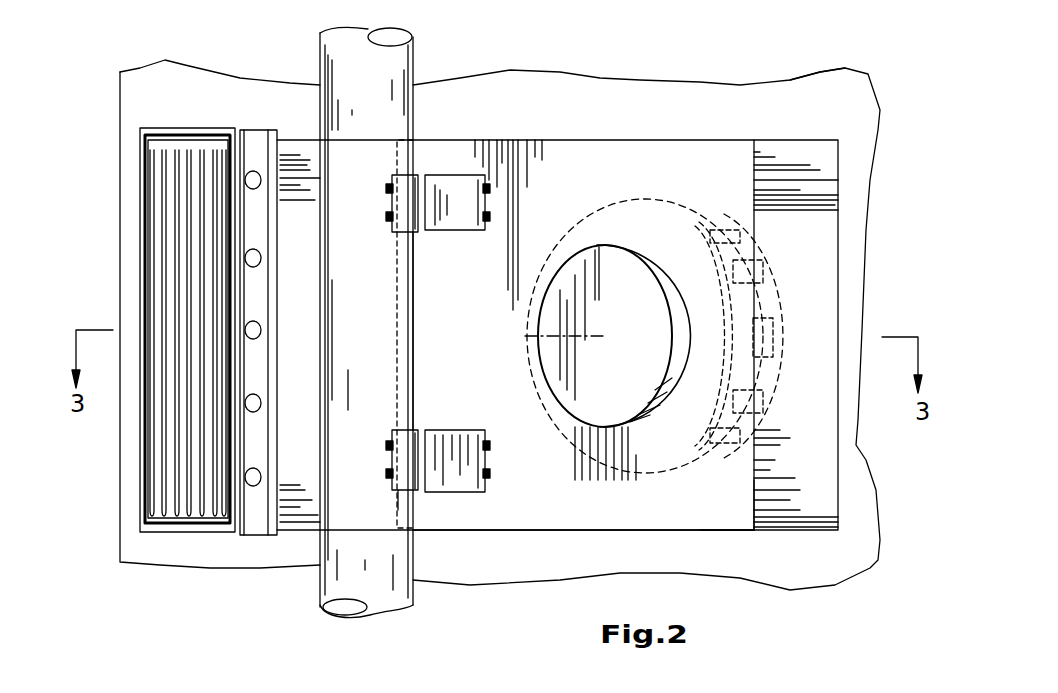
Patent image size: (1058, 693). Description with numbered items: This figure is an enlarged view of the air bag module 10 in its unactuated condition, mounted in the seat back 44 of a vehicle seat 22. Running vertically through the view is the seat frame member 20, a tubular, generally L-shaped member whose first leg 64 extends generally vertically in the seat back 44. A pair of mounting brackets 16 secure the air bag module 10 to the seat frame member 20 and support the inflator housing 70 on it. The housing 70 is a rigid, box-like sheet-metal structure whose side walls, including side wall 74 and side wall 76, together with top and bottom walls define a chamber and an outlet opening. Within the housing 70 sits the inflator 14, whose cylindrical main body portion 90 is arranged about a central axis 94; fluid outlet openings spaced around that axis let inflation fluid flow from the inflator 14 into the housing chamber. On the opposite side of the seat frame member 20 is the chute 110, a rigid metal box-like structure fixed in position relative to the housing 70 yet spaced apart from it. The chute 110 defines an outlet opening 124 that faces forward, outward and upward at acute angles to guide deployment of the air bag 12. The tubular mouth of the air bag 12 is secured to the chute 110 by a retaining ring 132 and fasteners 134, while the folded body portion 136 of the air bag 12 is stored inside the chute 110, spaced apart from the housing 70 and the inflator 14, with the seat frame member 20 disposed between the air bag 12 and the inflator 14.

The air bag module 10 is at (688, 105).
The air bag 12 is at (170, 208).
The inflator 14 is at (692, 207).
The mounting brackets 16 is at (456, 234).
The seat frame member 20 is at (425, 58).
The vehicle seat 22 is at (895, 112).
The seat back 44 is at (818, 93).
The first leg 64 is at (410, 598).
The inflator housing 70 is at (554, 555).
The side wall 74 is at (803, 503).
The side wall 76 is at (713, 503).
The cylindrical main body portion 90 is at (783, 313).
The central axis 94 is at (594, 336).
The chute 110 is at (182, 113).
The outlet opening 124 is at (143, 148).
The retaining ring 132 is at (272, 535).
The fasteners 134 is at (253, 172).
The body portion 136 is at (193, 275).